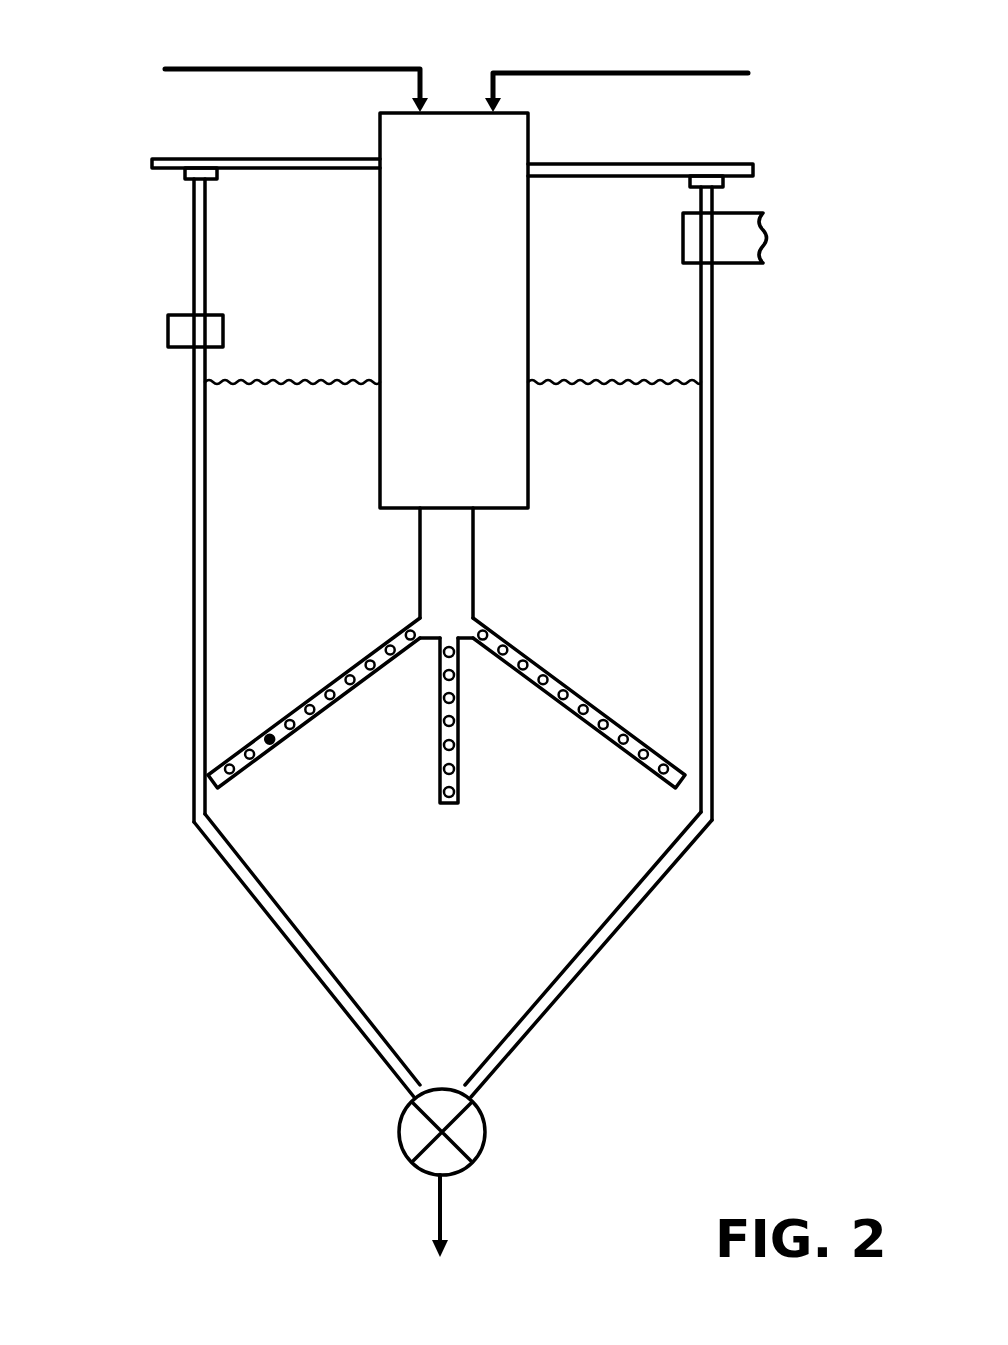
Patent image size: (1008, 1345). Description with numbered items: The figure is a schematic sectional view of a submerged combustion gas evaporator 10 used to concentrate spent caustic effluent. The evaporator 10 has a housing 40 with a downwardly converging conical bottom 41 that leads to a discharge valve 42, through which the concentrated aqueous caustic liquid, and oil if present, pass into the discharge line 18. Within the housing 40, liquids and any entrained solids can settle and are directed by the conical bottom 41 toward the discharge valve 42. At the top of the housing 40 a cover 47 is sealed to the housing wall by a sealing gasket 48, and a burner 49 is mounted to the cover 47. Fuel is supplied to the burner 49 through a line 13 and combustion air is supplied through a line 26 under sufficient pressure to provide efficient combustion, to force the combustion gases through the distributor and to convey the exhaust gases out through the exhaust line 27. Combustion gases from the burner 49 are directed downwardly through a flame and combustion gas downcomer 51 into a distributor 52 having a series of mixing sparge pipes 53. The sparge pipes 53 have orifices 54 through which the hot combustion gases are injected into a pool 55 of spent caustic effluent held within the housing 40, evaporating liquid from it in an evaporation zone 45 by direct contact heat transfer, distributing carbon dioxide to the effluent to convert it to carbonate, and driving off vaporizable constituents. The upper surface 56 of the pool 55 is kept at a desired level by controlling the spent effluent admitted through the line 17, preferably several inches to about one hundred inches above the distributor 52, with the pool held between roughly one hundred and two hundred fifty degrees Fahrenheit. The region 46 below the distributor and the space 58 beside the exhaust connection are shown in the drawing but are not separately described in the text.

The evaporator 10 is at (175, 749).
The line 13 is at (245, 66).
The line 17 is at (178, 332).
The discharge line 18 is at (440, 1207).
The line 26 is at (605, 72).
The exhaust line 27 is at (750, 237).
The housing 40 is at (192, 560).
The conical bottom 41 is at (297, 965).
The discharge valve 42 is at (485, 1118).
The evaporation zone 45 is at (662, 542).
The bottom chamber 46 is at (485, 984).
The cover 47 is at (152, 161).
The sealing gasket 48 is at (183, 176).
The burner 49 is at (530, 135).
The flame and combustion gas downcomer 51 is at (457, 568).
The distributor 52 is at (362, 652).
The mixing sparge pipes 53 is at (333, 683).
The orifices 54 is at (268, 737).
The pool 55 is at (317, 560).
The upper surface 56 is at (295, 382).
The space 58 is at (672, 265).